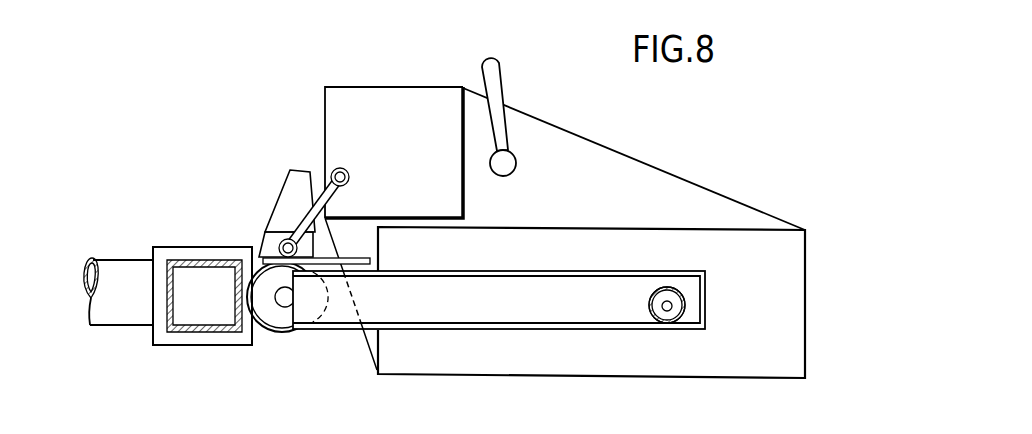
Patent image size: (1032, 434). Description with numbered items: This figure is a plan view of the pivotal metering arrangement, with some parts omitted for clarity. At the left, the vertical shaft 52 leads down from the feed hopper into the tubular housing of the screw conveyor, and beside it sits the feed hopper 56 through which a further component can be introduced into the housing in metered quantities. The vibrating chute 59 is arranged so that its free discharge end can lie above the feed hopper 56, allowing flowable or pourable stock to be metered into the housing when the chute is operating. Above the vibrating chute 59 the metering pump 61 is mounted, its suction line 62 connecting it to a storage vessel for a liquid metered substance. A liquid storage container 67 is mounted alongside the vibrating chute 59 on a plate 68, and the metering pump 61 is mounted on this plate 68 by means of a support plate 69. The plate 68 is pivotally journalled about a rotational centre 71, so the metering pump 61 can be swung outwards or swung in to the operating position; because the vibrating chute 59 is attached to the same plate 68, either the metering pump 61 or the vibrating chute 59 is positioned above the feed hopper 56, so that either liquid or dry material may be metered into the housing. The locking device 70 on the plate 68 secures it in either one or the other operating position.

The vertical shaft 52 is at (182, 260).
The feed hopper 56 is at (267, 335).
The vibrating chute 59 is at (336, 335).
The metering pump 61 is at (287, 205).
The suction line 62 is at (328, 185).
The liquid storage container 67 is at (433, 100).
The plate 68 is at (717, 202).
The support plate 69 is at (360, 257).
The locking device 70 is at (517, 157).
The rotational centre 71 is at (667, 313).